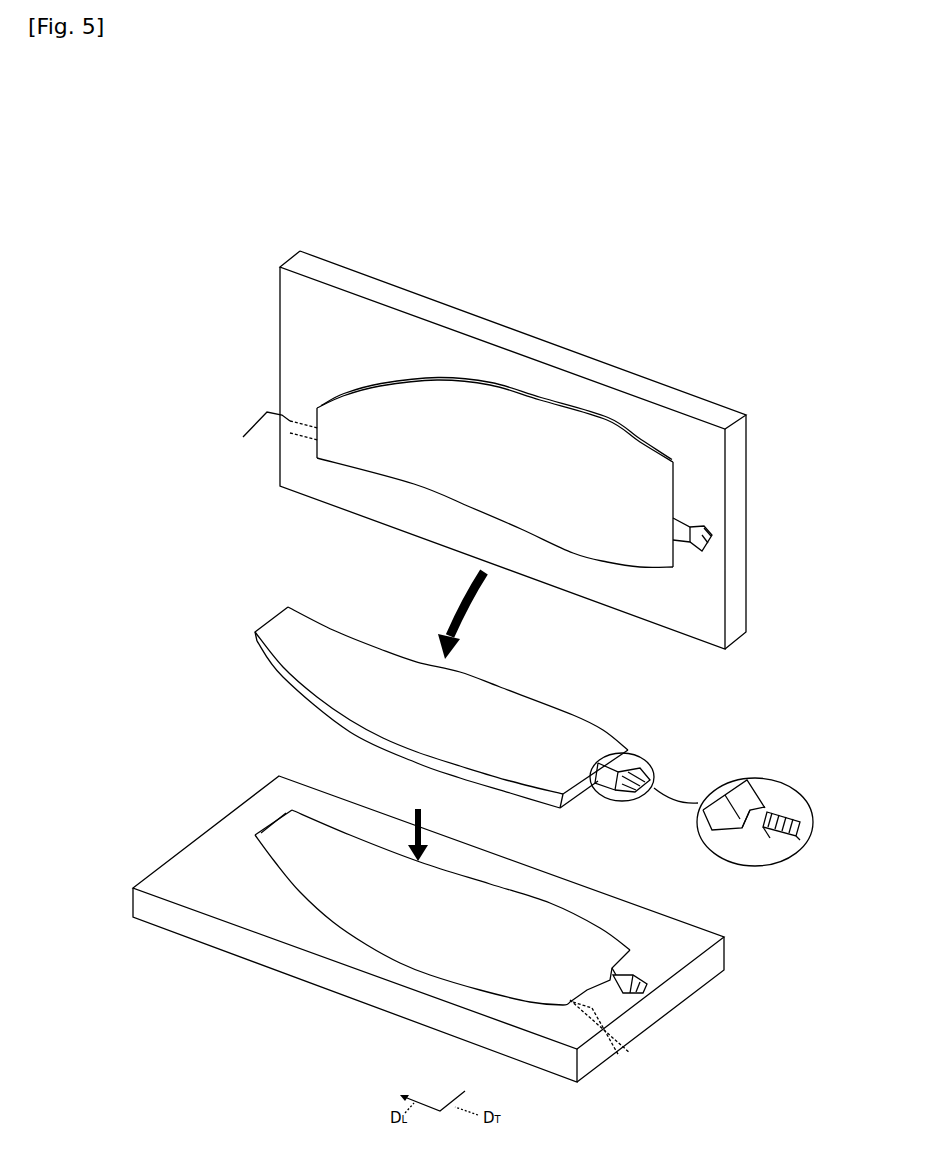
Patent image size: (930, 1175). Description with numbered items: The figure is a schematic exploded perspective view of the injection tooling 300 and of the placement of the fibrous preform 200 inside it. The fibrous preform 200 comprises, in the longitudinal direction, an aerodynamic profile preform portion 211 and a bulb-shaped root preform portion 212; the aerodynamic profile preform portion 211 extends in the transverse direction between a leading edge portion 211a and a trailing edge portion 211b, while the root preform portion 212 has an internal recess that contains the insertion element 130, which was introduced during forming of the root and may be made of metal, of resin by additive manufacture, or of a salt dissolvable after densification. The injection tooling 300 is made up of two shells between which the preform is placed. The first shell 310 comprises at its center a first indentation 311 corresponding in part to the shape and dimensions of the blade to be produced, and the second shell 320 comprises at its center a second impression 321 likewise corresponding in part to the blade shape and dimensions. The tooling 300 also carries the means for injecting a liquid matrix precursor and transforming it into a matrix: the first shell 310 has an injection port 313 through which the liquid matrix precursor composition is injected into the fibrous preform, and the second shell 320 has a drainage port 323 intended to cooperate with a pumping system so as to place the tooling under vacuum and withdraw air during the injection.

The injection tooling 300 is at (168, 488).
The second shell 320 is at (270, 381).
The first shell 310 is at (200, 822).
The drainage port 323 is at (290, 433).
The second impression 321 is at (552, 512).
The fibrous preform 200 is at (257, 602).
The aerodynamic profile preform portion 211 is at (327, 645).
The trailing edge portion 211b is at (518, 688).
The leading edge portion 211a is at (530, 795).
The root preform portion 212 is at (645, 760).
The insertion element 130 is at (793, 817).
The first indentation 311 is at (545, 932).
The injection port 313 is at (612, 1012).